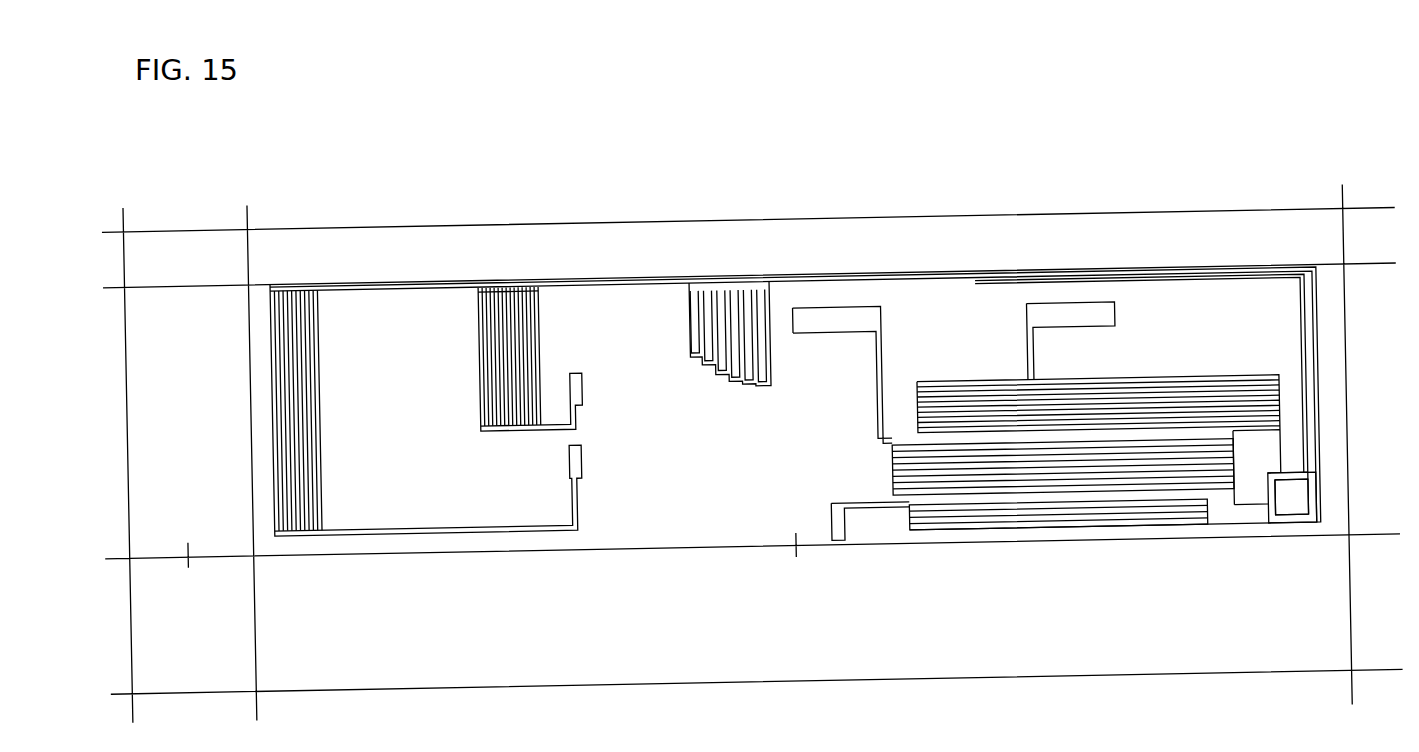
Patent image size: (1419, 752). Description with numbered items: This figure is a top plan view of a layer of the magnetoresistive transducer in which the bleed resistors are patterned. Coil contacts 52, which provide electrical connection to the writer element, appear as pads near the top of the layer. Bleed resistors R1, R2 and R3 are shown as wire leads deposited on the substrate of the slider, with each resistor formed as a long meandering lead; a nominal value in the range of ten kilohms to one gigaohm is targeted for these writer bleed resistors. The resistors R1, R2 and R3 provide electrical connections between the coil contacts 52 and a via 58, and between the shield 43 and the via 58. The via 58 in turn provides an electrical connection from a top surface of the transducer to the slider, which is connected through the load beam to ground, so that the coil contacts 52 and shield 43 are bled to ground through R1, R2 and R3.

The coil contacts 52 is at (1057, 302).
The bleed resistor R1 is at (1172, 376).
The bleed resistor R2 is at (892, 472).
The bleed resistor R3 is at (1065, 528).
The shield 43 is at (852, 556).
The via 58 is at (1287, 550).